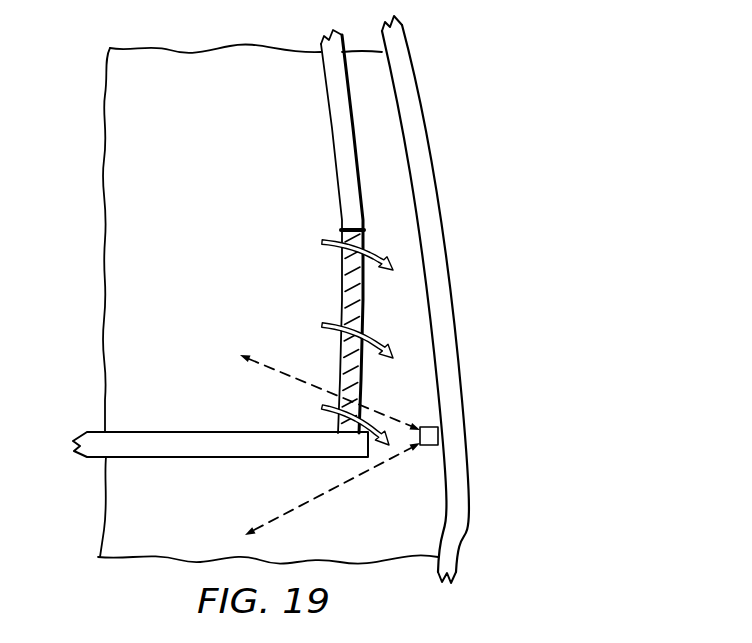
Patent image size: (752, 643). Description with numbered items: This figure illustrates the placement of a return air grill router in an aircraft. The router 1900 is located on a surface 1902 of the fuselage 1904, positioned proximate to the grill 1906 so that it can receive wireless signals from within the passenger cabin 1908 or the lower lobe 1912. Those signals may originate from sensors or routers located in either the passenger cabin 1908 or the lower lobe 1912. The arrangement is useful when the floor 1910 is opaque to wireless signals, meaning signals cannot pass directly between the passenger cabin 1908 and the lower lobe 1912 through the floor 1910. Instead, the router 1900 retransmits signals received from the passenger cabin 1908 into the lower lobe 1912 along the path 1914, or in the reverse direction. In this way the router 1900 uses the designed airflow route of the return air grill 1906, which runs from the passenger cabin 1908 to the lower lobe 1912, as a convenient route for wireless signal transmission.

The router 1900 is at (428, 447).
The surface 1902 is at (404, 131).
The fuselage 1904 is at (447, 258).
The grill 1906 is at (338, 182).
The passenger cabin 1908 is at (257, 253).
The floor 1910 is at (197, 432).
The lower lobe 1912 is at (215, 514).
The path 1914 is at (333, 488).